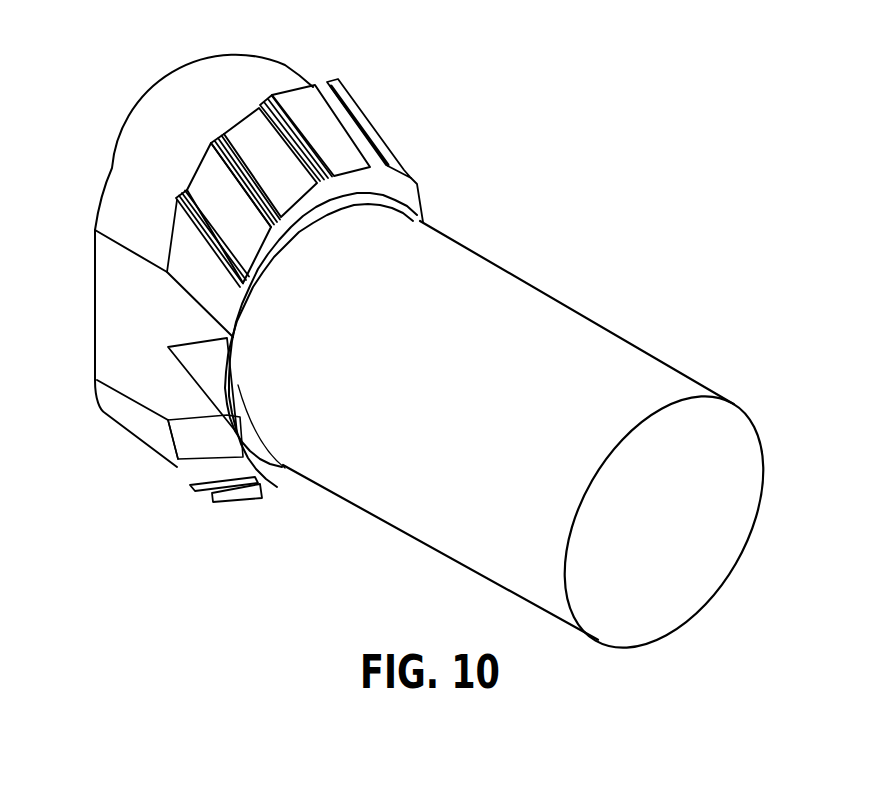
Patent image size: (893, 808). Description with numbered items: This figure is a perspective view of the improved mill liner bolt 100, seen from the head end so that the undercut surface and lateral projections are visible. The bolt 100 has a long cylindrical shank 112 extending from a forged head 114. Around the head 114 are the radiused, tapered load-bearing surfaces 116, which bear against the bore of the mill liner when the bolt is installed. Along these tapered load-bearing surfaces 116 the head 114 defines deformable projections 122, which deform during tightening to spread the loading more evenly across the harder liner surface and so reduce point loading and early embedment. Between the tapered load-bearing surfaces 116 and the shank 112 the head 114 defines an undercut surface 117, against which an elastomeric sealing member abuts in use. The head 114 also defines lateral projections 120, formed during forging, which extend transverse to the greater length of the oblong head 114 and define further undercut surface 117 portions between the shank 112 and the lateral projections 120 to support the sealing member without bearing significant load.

The mill liner bolt 100 is at (621, 192).
The shank 112 is at (574, 334).
The head 114 is at (190, 82).
The tapered load-bearing surfaces 116 is at (330, 118).
The undercut surface 117 is at (408, 192).
The lateral projections 120 is at (210, 368).
The deformable projections 122 is at (388, 135).